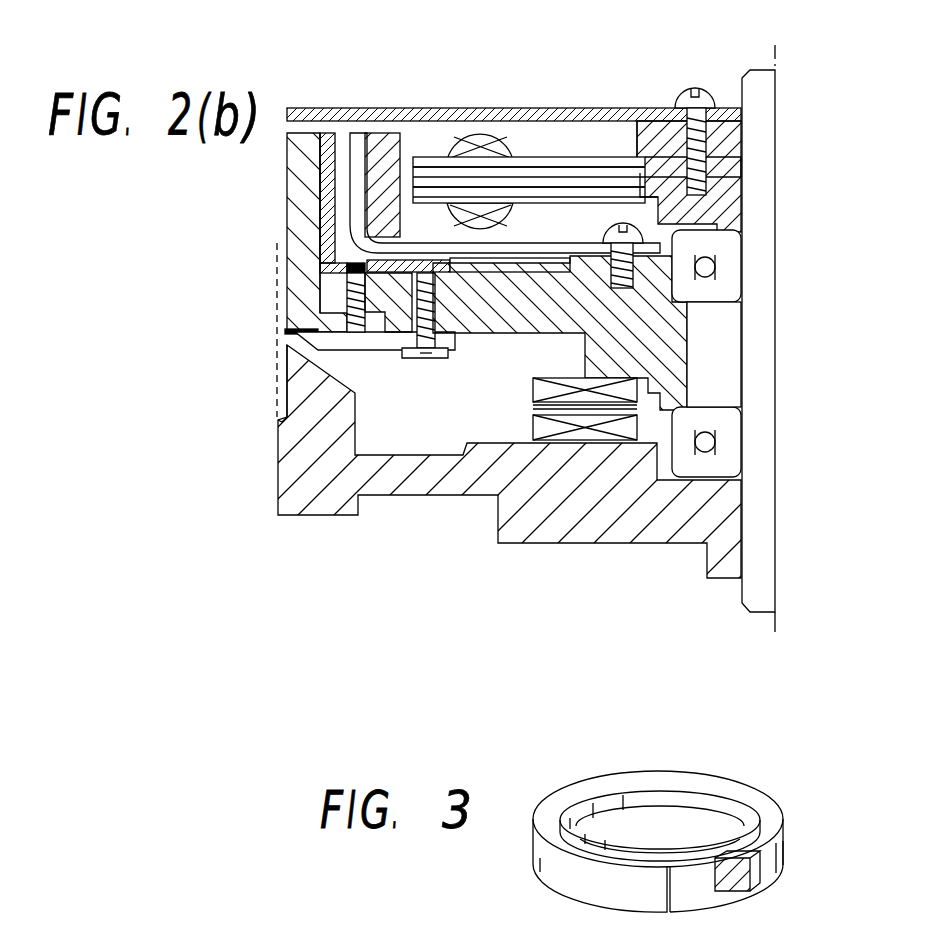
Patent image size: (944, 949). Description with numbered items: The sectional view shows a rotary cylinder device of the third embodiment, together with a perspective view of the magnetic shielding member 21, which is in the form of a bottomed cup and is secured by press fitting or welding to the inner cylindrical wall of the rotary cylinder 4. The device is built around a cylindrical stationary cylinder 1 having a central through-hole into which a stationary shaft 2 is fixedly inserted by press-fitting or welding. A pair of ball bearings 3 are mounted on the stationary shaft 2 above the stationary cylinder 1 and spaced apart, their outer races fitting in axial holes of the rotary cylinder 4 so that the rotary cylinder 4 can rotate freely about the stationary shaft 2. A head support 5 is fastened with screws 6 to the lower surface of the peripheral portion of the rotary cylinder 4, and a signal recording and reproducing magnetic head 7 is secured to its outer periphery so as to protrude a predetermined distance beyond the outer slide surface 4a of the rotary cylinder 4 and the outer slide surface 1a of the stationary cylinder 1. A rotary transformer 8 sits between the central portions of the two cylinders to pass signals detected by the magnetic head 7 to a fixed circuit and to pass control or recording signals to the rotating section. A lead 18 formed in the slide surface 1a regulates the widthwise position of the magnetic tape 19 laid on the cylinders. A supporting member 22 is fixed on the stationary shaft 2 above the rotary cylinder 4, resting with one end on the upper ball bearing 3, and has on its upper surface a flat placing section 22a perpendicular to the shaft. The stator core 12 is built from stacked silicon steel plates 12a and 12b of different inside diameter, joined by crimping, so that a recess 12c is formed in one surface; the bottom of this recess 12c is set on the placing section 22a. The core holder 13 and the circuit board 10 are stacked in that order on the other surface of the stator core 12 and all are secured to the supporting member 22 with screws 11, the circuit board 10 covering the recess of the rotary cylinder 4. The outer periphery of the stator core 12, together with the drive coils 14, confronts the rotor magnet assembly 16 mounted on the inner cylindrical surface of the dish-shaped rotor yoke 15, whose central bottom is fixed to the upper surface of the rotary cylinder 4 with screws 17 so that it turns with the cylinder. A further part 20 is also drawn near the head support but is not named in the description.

In FIG. 2b, the stationary cylinder 1 is at (295, 502).
In FIG. 2b, the outer cylindrical surface (slide surface) of stationary cylinder 1a is at (287, 393).
In FIG. 2b, the stationary shaft 2 is at (762, 488).
In FIG. 2b, the ball bearings 3 is at (725, 246).
In FIG. 2b, the rotary cylinder 4 is at (303, 196).
In FIG. 2b, the outer cylindrical surface (slide surface) of rotary cylinder 4a is at (290, 233).
In FIG. 2b, the head support 5 is at (376, 351).
In FIG. 2b, the screws 6 is at (405, 360).
In FIG. 2b, the magnetic head 7 is at (285, 332).
In FIG. 2b, the rotary transformer 8 is at (533, 421).
In FIG. 2b, the circuit board 10 is at (470, 108).
In FIG. 2b, the screws 11 is at (686, 92).
In FIG. 2b, the stator core 12 is at (660, 50).
In FIG. 2b, the silicon steel plate 12a is at (585, 160).
In FIG. 2b, the silicon steel plate 12b is at (545, 190).
In FIG. 2b, the recess 12c is at (640, 160).
In FIG. 2b, the core holder 13 is at (714, 150).
In FIG. 2b, the drive coils 14 is at (452, 145).
In FIG. 2b, the rotor yoke 15 is at (355, 135).
In FIG. 2b, the rotor magnet assembly 16 is at (383, 135).
In FIG. 2b, the screws 17 is at (630, 280).
In FIG. 2b, the lead 18 is at (283, 421).
In FIG. 2b, the magnetic tape 19 is at (277, 361).
In FIG. 2b, the screw 20 is at (347, 299).
In FIG. 2b, the magnetic shielding member 21 is at (325, 135).
In FIG. 3, the magnetic shielding member 21 is at (784, 800).
In FIG. 2b, the supporting member 22 is at (723, 201).
In FIG. 2b, the placing section 22a is at (742, 162).